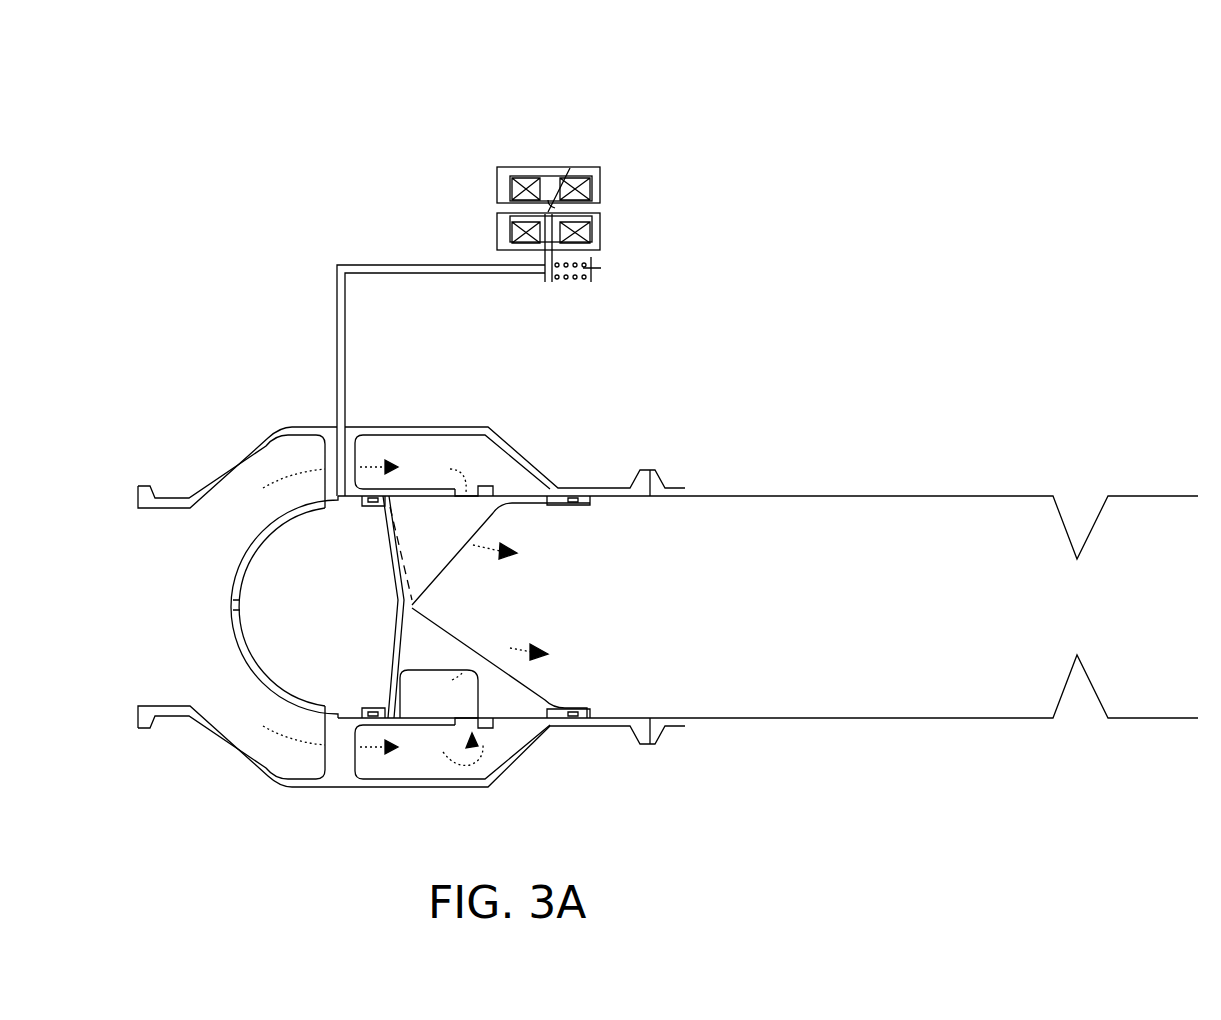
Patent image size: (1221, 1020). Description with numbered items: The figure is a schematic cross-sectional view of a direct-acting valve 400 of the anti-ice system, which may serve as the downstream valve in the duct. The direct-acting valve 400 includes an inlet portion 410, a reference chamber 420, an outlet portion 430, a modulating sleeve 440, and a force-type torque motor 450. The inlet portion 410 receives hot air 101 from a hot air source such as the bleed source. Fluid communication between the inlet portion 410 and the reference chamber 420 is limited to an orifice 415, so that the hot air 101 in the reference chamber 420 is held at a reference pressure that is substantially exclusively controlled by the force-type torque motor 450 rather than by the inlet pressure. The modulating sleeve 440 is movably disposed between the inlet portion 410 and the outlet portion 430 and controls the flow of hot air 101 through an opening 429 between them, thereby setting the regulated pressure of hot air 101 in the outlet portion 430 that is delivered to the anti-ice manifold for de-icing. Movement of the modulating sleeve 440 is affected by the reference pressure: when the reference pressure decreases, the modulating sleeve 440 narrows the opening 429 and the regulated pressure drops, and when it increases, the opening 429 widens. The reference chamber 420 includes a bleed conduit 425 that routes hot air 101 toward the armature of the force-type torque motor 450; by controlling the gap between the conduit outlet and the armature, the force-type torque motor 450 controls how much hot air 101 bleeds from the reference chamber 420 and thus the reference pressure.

The direct-acting valve 400 is at (318, 70).
The inlet portion 410 is at (411, 607).
The orifice 415 is at (247, 622).
The reference chamber 420 is at (504, 572).
The bleed conduit 425 is at (345, 322).
The opening 429 is at (473, 486).
The outlet portion 430 is at (768, 607).
The modulating sleeve 440 is at (405, 620).
The force-type torque motor 450 is at (632, 218).
The hot air 101 is at (302, 468).